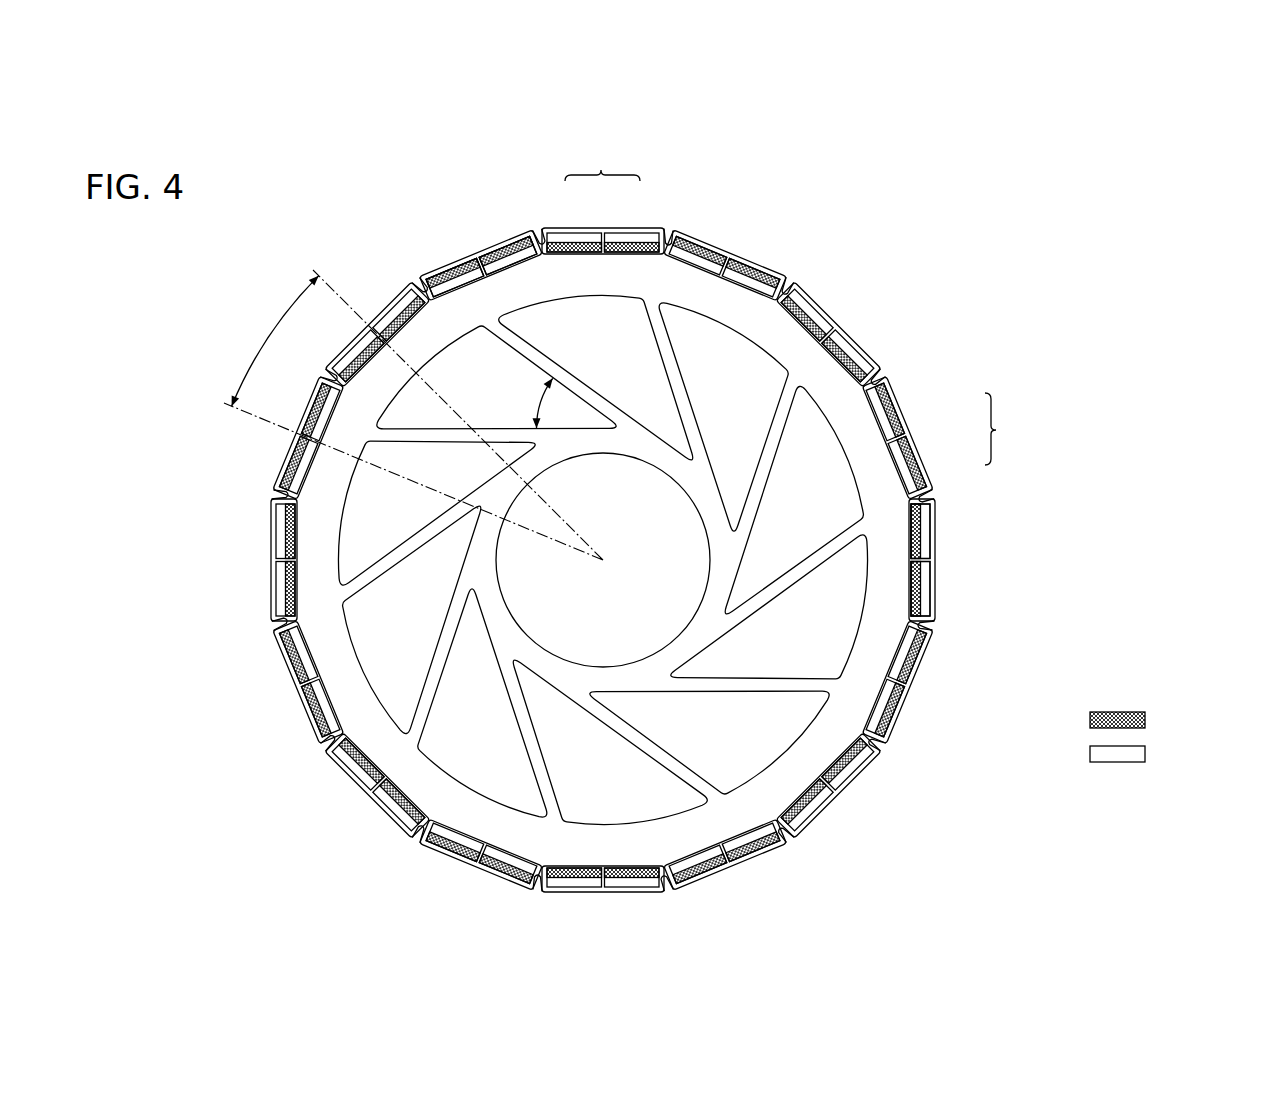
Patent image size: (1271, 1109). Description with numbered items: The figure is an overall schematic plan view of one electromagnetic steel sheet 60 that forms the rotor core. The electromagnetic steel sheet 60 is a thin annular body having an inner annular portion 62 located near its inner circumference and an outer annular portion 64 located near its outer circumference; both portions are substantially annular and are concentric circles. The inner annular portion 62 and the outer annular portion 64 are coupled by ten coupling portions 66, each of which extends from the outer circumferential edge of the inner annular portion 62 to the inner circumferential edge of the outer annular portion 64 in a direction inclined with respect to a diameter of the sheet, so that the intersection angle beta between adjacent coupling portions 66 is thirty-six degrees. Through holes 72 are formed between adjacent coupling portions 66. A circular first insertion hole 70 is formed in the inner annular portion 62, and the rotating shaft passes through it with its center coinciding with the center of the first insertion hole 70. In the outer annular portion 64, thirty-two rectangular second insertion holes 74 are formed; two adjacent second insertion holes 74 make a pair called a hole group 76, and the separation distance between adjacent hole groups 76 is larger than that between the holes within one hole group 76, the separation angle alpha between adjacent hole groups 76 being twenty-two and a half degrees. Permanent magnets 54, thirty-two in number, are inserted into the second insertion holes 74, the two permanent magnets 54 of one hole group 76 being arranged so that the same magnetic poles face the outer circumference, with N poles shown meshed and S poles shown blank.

The permanent magnet 54 is at (633, 242).
The electromagnetic steel sheet 60 is at (300, 237).
The inner annular portion 62 is at (620, 455).
The outer annular portion 64 is at (428, 343).
The coupling portion 66 is at (778, 590).
The first insertion hole 70 is at (506, 600).
The through hole 72 is at (770, 470).
The second insertion hole 74 is at (503, 280).
The hole group 76 is at (726, 396).